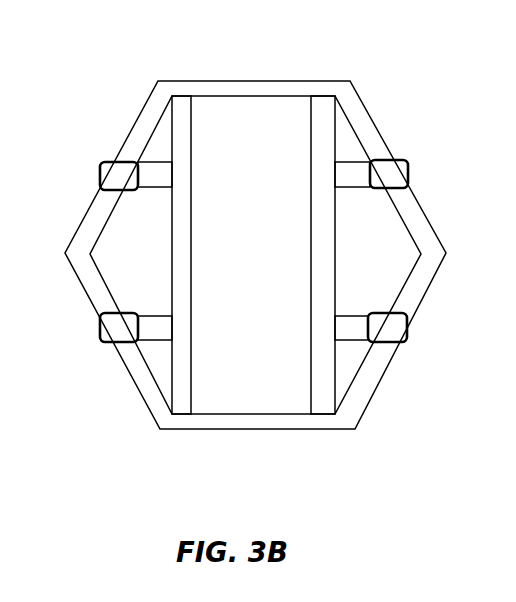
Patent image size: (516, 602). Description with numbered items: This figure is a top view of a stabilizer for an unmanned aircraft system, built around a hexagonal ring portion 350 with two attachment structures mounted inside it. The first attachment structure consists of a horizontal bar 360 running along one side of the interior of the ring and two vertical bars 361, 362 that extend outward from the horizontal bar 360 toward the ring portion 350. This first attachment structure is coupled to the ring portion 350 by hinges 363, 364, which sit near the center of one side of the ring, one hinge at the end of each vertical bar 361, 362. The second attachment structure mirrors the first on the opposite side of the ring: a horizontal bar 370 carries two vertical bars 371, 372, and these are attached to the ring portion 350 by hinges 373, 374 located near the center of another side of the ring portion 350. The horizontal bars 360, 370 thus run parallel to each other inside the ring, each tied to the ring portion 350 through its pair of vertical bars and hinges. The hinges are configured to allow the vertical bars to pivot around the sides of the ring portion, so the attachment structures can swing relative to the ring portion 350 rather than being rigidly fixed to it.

The ring portion 350 is at (309, 75).
The horizontal bar 360 is at (189, 252).
The horizontal bar 370 is at (310, 293).
The vertical bar 361 is at (145, 188).
The vertical bar 362 is at (150, 314).
The vertical bar 371 is at (354, 183).
The vertical bar 372 is at (362, 315).
The hinge 363 is at (100, 162).
The hinge 364 is at (98, 328).
The hinge 373 is at (409, 160).
The hinge 374 is at (407, 323).